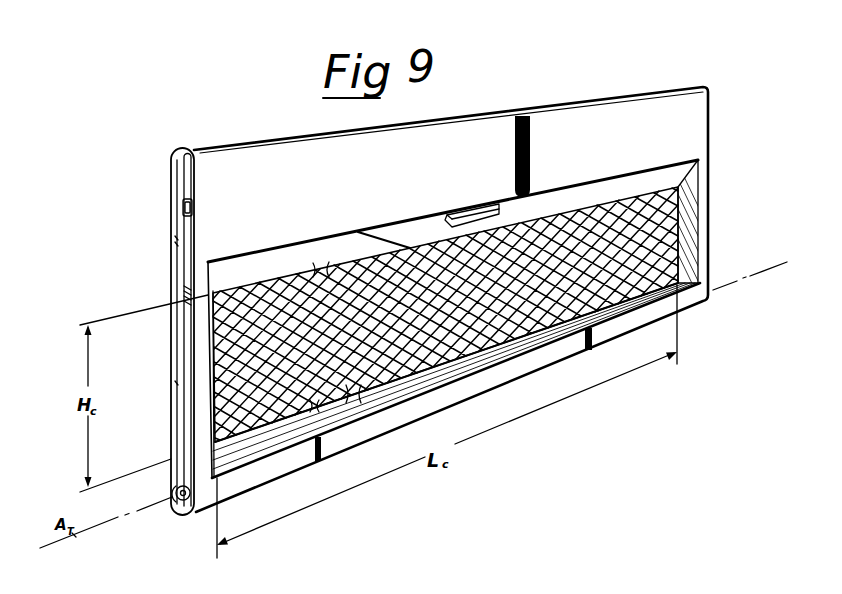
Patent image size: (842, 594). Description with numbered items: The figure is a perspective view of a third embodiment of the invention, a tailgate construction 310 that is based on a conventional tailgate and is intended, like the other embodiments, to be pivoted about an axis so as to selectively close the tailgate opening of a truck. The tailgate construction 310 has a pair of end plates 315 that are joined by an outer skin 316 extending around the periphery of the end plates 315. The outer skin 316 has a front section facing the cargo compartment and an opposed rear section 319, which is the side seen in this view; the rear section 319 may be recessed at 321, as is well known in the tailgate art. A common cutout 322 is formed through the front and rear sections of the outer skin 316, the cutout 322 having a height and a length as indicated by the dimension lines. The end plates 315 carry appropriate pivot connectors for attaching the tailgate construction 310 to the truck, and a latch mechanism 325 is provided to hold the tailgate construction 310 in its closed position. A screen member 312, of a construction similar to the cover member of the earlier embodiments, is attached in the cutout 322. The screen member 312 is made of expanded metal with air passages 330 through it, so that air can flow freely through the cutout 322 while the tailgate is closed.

The tailgate construction 310 is at (165, 147).
The screen member 312 is at (284, 272).
The end plate 315 is at (186, 275).
The outer skin 316 is at (694, 132).
The rear section 319 is at (408, 195).
The recess 321 is at (691, 213).
The common cutout 322 is at (684, 250).
The latch mechanism 325 is at (183, 205).
The air passage 330 is at (358, 264).